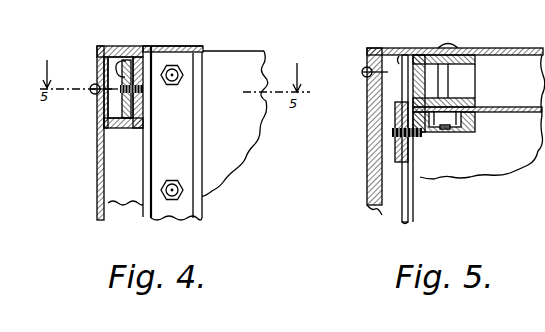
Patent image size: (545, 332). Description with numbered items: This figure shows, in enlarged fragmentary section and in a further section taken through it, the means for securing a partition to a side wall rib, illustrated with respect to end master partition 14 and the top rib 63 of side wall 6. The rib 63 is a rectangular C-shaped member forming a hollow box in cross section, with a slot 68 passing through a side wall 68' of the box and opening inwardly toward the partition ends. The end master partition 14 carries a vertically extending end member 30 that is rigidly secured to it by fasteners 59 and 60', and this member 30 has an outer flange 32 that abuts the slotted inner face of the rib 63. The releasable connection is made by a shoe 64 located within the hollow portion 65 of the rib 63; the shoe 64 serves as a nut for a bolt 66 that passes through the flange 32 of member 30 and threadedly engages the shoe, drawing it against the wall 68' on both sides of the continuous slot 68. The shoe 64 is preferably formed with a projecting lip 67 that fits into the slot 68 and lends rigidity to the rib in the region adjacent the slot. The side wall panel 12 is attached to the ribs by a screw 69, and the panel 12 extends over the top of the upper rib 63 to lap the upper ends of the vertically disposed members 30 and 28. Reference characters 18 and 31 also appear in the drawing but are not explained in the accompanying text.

In FIG. 4, the side wall 6 is at (97, 175).
In FIG. 4, the side wall panel 12 is at (97, 150).
In FIG. 4, the end master partition 14 is at (247, 53).
In FIG. 5, the end master partition 14 is at (510, 51).
In FIG. 4, the channel member 18 is at (152, 58).
In FIG. 5, the vertically disposed member 28 is at (468, 98).
In FIG. 4, the end member 30 is at (190, 48).
In FIG. 5, the end member 30 is at (470, 132).
In FIG. 4, the flange 31 is at (214, 53).
In FIG. 4, the flange 32 is at (155, 48).
In FIG. 5, the flange 32 is at (419, 152).
In FIG. 4, the fastener 59 is at (183, 77).
In FIG. 5, the fastener 59 is at (452, 47).
In FIG. 4, the fastener 60' is at (194, 187).
In FIG. 4, the top rib 63 is at (97, 104).
In FIG. 4, the shoe 64 is at (122, 112).
In FIG. 5, the shoe 64 is at (395, 149).
In FIG. 4, the hollow portion 65 is at (100, 62).
In FIG. 4, the bolt 66 is at (151, 96).
In FIG. 5, the bolt 66 is at (424, 138).
In FIG. 5, the projecting lip 67 is at (405, 97).
In FIG. 4, the slot 68 is at (135, 75).
In FIG. 5, the slot 68 is at (414, 126).
In FIG. 4, the side wall of box member 68' is at (145, 44).
In FIG. 4, the screw 69 is at (91, 86).